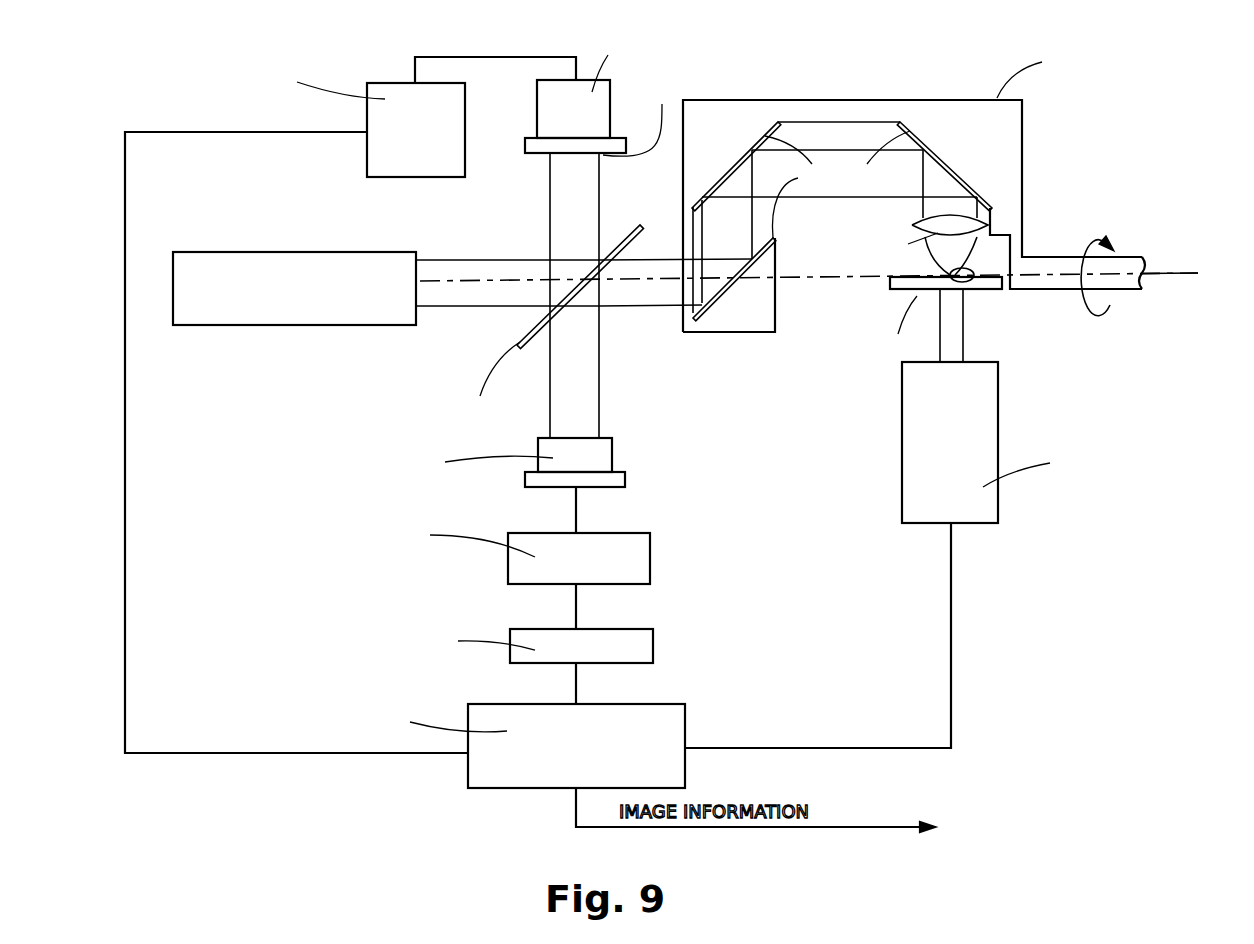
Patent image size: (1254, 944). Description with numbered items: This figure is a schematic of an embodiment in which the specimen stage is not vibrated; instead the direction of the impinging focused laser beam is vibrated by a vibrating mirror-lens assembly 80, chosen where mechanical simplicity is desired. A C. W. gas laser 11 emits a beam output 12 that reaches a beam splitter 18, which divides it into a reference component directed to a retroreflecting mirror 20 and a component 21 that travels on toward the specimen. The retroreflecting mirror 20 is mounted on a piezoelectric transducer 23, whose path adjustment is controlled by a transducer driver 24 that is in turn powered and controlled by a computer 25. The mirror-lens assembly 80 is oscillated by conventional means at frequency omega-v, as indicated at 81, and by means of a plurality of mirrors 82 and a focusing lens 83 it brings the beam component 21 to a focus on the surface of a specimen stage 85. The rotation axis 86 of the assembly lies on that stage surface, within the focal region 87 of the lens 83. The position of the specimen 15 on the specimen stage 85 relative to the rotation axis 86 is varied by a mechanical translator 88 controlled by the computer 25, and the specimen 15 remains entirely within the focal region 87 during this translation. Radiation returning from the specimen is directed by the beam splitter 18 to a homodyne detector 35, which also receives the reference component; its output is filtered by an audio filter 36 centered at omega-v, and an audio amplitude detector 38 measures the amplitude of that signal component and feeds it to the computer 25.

The C. W. gas laser 11 is at (292, 312).
The beam output 12 is at (491, 281).
The specimen 15 is at (966, 283).
The beam splitter 18 is at (518, 340).
The retroreflecting mirror 20 is at (524, 147).
The beam component 21 is at (649, 281).
The piezoelectric transducer 23 is at (585, 114).
The transducer driver 24 is at (426, 134).
The computer 25 is at (588, 753).
The homodyne detector 35 is at (586, 465).
The audio filter 36 is at (588, 568).
The audio amplitude detector 38 is at (588, 656).
The vibrating mirror-lens assembly 80 is at (1032, 160).
The oscillation at frequency omega-v 81 is at (1080, 298).
The mirrors 82 is at (733, 163).
The focusing lens 83 is at (925, 216).
The specimen stage 85 is at (892, 290).
The rotation axis 86 is at (1172, 275).
The focal region 87 is at (968, 279).
The mechanical translator 88 is at (960, 447).